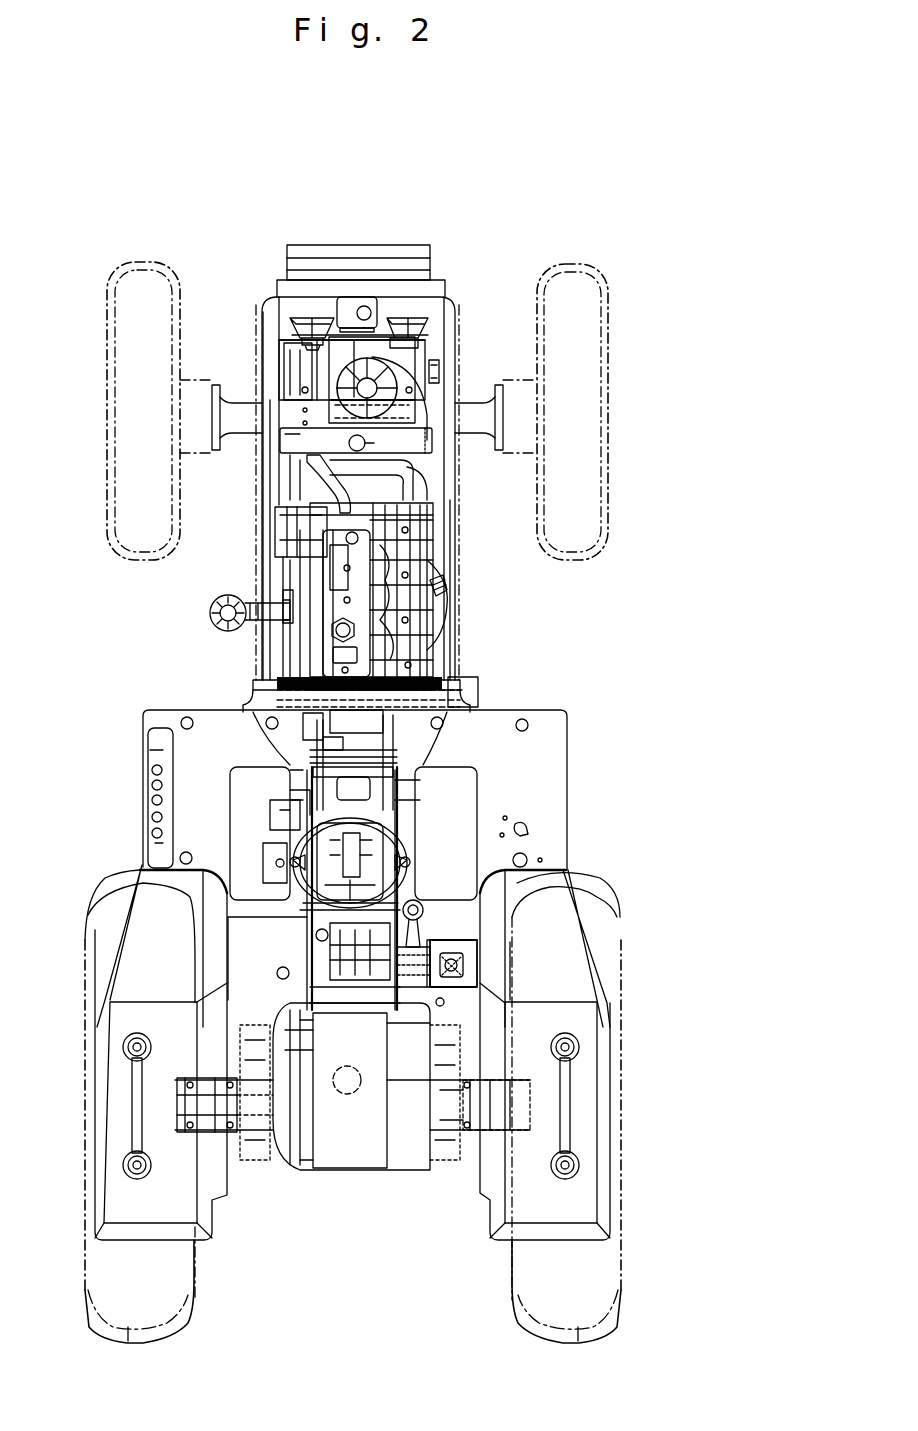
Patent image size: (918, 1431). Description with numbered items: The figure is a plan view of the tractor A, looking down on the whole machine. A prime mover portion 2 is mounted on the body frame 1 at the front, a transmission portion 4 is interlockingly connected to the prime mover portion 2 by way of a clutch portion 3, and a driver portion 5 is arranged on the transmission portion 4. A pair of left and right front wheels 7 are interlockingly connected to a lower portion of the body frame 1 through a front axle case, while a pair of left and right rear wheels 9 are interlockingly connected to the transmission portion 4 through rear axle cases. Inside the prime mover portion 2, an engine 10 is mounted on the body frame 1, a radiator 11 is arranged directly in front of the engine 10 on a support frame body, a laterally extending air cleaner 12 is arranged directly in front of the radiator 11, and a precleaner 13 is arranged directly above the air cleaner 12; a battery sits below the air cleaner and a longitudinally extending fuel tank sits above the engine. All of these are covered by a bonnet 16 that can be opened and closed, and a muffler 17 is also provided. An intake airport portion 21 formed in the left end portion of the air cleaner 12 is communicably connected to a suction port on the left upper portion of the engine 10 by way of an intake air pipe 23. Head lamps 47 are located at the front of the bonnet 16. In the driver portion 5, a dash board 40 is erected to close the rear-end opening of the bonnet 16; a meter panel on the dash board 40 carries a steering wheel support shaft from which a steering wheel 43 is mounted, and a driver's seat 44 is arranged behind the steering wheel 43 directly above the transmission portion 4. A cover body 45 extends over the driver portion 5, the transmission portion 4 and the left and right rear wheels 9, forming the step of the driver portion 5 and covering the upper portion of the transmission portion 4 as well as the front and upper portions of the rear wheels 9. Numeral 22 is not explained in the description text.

The tractor A is at (637, 238).
The body frame 1 is at (287, 242).
The prime mover portion 2 is at (466, 375).
The clutch portion 3 is at (466, 688).
The transmission portion 4 is at (330, 1127).
The driver portion 5 is at (583, 834).
The front wheels 7 is at (181, 327).
The rear wheels 9 is at (197, 1282).
The engine 10 is at (430, 560).
The radiator 11 is at (280, 446).
The air cleaner 12 is at (344, 350).
The precleaner 13 is at (372, 350).
The bonnet 16 is at (247, 530).
The muffler 17 is at (216, 626).
The intake airport portion 21 is at (448, 342).
The engine side housing 22 is at (438, 612).
The intake air pipe 23 is at (440, 497).
The dash board 40 is at (425, 772).
The steering wheel 43 is at (440, 870).
The driver's seat 44 is at (345, 1153).
The cover body 45 is at (553, 789).
The head lamp 47 is at (298, 317).